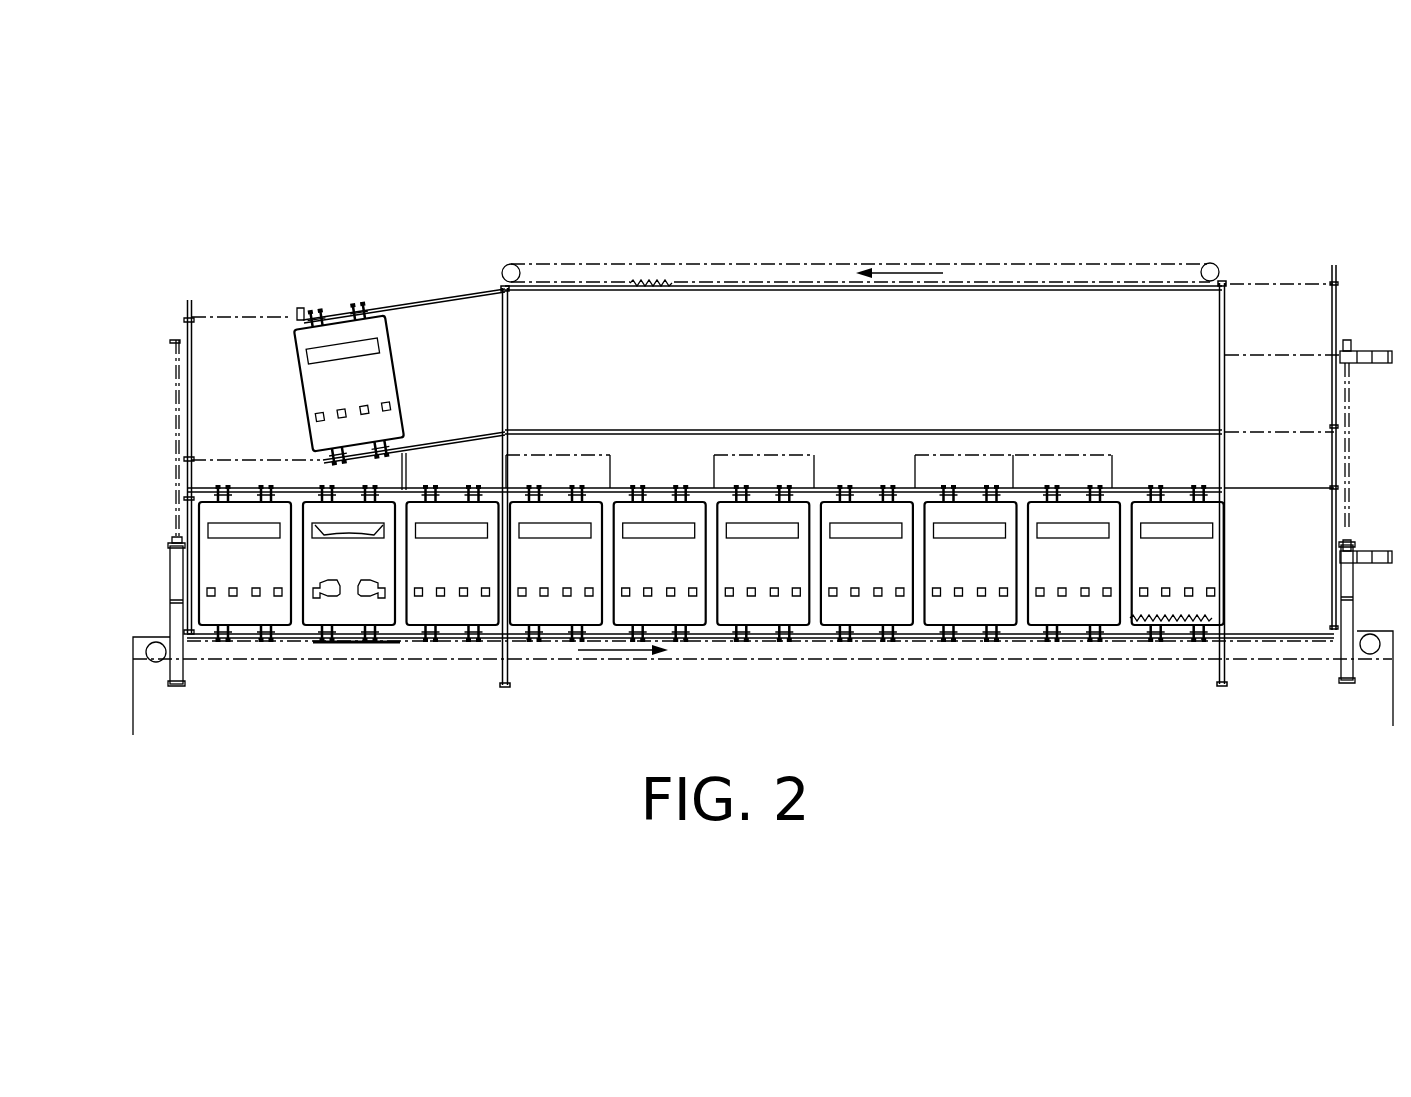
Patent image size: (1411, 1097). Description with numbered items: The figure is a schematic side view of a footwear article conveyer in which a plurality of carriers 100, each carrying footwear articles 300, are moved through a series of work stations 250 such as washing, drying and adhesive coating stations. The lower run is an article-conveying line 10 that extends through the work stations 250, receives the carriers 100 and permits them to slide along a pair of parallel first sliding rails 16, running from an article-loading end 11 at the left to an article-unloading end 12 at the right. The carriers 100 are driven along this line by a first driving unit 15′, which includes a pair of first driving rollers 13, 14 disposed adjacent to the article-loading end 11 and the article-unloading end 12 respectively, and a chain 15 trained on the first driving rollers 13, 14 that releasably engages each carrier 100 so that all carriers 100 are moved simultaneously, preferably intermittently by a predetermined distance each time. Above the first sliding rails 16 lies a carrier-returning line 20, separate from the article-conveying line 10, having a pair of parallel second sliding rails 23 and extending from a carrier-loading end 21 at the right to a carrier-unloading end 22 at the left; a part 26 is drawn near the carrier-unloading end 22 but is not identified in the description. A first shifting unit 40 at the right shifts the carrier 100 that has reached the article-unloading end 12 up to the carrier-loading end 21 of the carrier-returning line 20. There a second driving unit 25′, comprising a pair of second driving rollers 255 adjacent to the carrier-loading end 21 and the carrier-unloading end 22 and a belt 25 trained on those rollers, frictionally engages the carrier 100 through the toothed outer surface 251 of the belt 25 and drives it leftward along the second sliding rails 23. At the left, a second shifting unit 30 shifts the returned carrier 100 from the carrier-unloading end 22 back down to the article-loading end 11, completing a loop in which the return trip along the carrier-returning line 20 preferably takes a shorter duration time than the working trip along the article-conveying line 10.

The article-conveying line 10 is at (940, 684).
The article-loading end 11 is at (167, 637).
The article-unloading end 12 is at (1357, 631).
The first driving roller 13 is at (153, 662).
The first driving roller 14 is at (1372, 655).
The chain 15 is at (217, 663).
The first driving unit 15′ is at (1045, 659).
The first sliding rails 16 is at (436, 478).
The carrier-returning line 20 is at (851, 192).
The carrier-loading end 21 is at (1222, 281).
The carrier-unloading end 22 is at (311, 312).
The second sliding rails 23 is at (832, 430).
The belt 25 is at (1142, 262).
The second driving unit 25′ is at (998, 260).
The rail end stop 26 is at (300, 314).
The second shifting unit 30 is at (176, 482).
The first shifting unit 40 is at (1355, 471).
The carrier 100 is at (456, 596).
The work stations 250 is at (464, 475).
The toothed outer surface 251 is at (665, 282).
The second driving rollers 255 is at (508, 264).
The footwear articles 300 is at (372, 594).